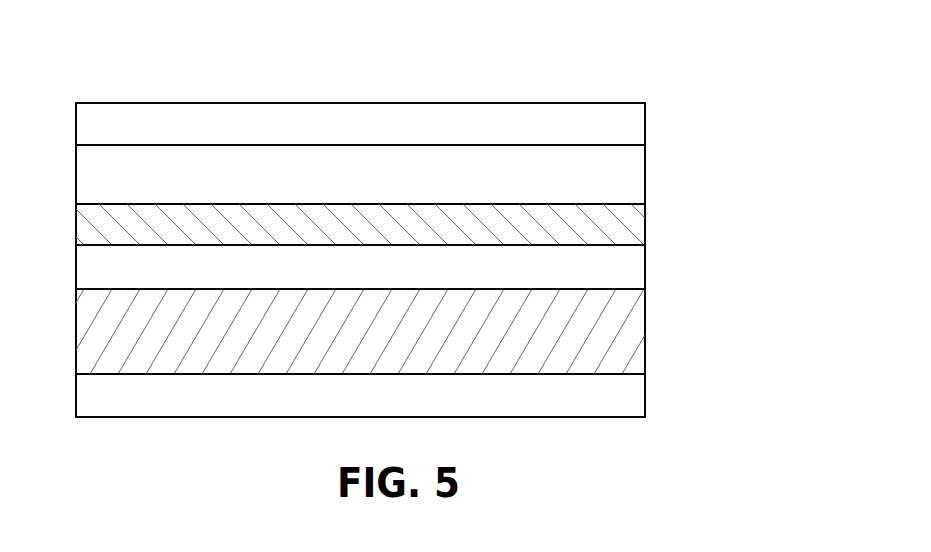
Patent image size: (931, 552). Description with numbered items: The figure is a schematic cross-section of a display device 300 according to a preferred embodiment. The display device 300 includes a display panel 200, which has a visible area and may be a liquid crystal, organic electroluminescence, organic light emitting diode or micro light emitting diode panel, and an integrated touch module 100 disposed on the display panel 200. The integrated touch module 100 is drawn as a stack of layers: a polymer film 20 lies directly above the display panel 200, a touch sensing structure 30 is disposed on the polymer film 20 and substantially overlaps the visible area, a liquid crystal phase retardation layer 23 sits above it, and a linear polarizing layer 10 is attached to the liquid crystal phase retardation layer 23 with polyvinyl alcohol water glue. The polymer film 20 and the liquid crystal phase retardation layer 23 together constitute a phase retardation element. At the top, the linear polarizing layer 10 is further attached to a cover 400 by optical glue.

The display device 300 is at (36, 68).
The cover 400 is at (645, 126).
The integrated touch module 100 is at (437, 259).
The linear polarizing layer 10 is at (645, 176).
The liquid crystal phase retardation layer 23 is at (645, 227).
The touch sensing structure 30 is at (645, 268).
The polymer film 20 is at (645, 333).
The display panel 200 is at (645, 396).